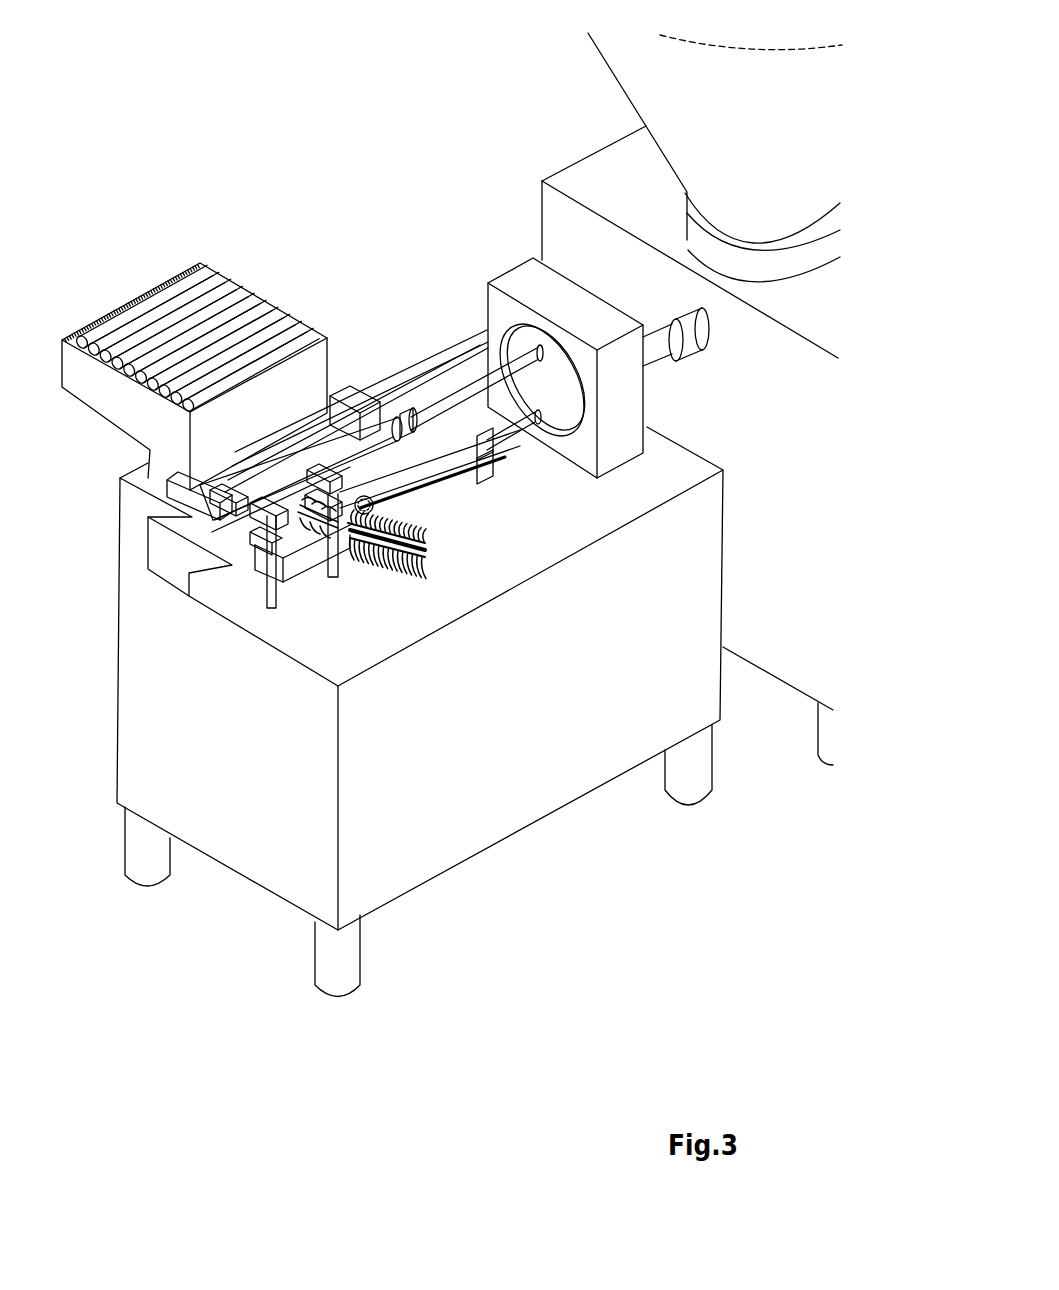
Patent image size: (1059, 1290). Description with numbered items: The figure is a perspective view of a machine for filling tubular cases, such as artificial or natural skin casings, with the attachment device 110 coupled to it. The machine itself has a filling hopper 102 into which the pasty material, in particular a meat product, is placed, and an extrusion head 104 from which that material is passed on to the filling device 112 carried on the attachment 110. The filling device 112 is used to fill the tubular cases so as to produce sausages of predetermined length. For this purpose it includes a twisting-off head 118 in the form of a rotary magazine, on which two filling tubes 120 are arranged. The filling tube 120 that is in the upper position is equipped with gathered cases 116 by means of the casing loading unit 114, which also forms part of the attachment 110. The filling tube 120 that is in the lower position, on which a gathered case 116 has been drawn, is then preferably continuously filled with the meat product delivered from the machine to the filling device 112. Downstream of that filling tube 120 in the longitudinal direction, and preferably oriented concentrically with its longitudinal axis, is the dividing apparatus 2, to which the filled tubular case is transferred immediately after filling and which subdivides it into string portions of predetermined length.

The dividing apparatus 2 is at (354, 563).
The filling hopper 102 is at (633, 65).
The extrusion head 104 is at (698, 337).
The attachment device 110 is at (457, 962).
The filling device 112 is at (450, 297).
The casing loading unit 114 is at (221, 332).
The gathered cases 116 is at (145, 316).
The twisting-off head 118 is at (521, 282).
The filling tubes 120 is at (446, 404).